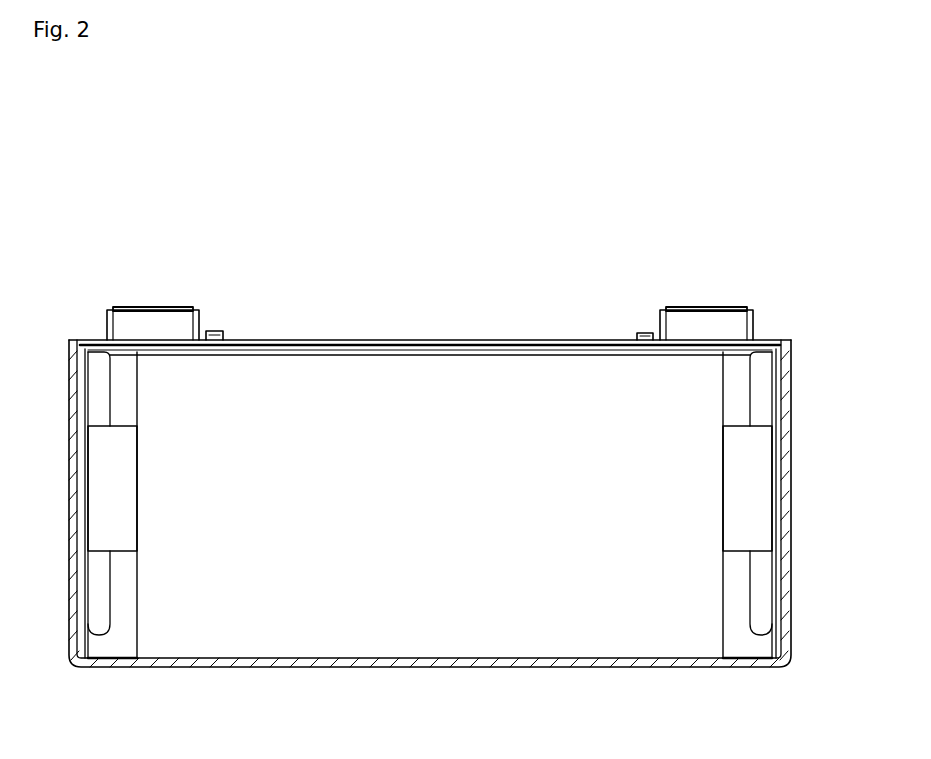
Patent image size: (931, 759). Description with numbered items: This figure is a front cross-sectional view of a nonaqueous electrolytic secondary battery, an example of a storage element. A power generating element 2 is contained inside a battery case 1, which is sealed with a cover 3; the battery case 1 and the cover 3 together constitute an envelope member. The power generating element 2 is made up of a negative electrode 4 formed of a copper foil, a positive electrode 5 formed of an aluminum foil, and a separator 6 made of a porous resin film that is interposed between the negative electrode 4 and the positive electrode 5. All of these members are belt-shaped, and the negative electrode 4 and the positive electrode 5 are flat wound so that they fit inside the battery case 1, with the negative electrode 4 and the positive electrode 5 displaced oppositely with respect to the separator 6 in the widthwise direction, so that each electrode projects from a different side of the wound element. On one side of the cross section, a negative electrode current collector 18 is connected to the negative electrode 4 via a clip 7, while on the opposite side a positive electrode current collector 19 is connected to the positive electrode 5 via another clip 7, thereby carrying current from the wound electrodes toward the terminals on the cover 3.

The battery case 1 is at (582, 662).
The power generating element 2 is at (350, 632).
The cover 3 is at (423, 340).
The negative electrode 4 is at (125, 645).
The positive electrode 5 is at (735, 645).
The separator 6 is at (267, 640).
The clip 7 is at (97, 495).
The negative electrode current collector 18 is at (97, 384).
The positive electrode current collector 19 is at (766, 392).